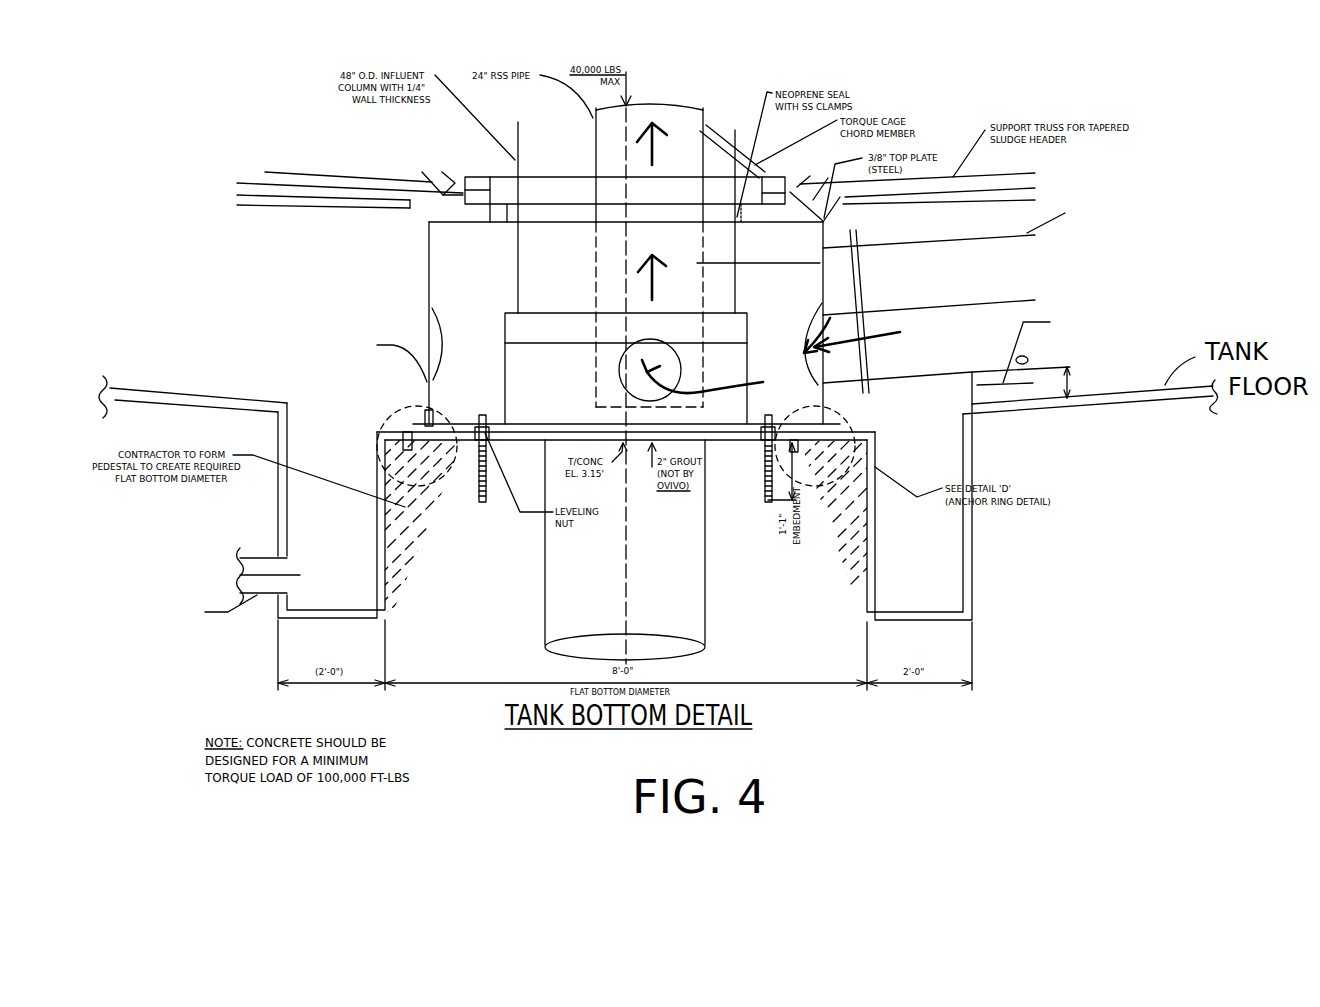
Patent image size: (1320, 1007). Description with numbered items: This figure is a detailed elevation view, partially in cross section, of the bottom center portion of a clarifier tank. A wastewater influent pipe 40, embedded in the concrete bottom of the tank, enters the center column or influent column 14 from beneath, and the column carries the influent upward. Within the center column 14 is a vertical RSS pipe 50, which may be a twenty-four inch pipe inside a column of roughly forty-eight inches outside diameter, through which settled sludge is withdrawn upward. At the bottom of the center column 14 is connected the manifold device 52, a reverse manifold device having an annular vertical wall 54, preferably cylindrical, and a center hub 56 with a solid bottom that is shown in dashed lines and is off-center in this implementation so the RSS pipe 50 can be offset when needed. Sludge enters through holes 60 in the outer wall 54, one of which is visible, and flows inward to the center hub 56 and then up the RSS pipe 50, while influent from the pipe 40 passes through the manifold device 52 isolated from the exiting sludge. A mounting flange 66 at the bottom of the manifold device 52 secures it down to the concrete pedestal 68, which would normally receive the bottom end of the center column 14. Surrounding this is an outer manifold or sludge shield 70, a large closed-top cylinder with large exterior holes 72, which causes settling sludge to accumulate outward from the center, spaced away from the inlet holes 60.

The center column 14 is at (520, 265).
The RSS pipe 50 is at (637, 250).
The manifold device 52 is at (515, 378).
The annular vertical wall 54 is at (257, 553).
The center hub 56 is at (705, 365).
The holes 60 is at (657, 395).
The influent pipe 40 is at (697, 585).
The mounting flange 66 is at (405, 507).
The pedestal 68 is at (875, 562).
The sludge shield 70 is at (823, 280).
The exterior holes 72 is at (427, 345).